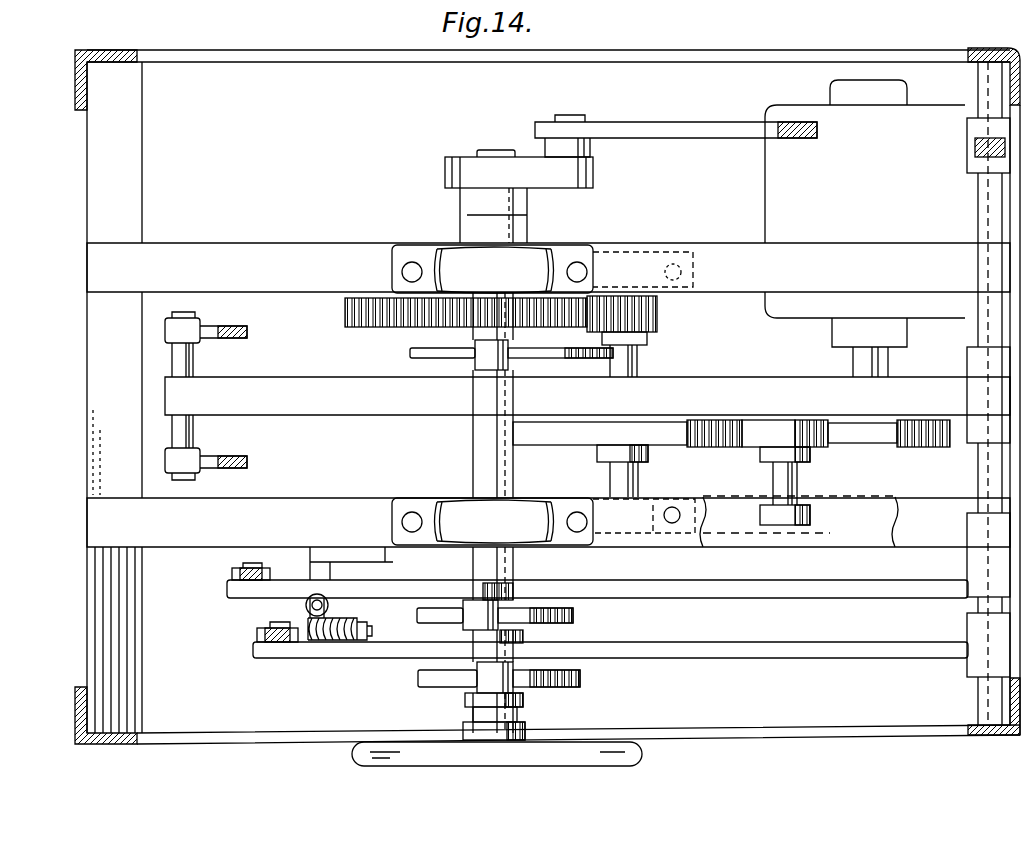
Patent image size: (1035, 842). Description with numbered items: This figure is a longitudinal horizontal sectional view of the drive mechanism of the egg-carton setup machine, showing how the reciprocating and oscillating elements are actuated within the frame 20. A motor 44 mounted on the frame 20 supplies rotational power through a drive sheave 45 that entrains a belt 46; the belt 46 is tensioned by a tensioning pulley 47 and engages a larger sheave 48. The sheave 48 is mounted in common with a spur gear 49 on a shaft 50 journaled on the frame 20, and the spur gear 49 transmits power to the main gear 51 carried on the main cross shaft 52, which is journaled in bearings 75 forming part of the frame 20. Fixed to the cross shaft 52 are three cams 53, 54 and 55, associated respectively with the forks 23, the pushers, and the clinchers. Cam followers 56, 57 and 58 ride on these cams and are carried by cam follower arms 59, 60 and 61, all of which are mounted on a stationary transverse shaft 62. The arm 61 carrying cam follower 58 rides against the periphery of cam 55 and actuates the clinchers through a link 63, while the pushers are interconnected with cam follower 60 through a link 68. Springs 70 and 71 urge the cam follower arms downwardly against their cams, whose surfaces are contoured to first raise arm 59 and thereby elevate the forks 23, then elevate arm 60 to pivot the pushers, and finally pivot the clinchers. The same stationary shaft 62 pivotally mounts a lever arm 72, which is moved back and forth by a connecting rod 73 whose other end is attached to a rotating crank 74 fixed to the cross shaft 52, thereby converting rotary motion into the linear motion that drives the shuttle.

The frame 20 is at (81, 252).
The forks 23 is at (232, 456).
The motor 44 is at (890, 216).
The drive sheave 45 is at (931, 443).
The belt 46 is at (875, 437).
The tensioning pulley 47 is at (803, 430).
The sheave 48 is at (720, 440).
The spur gear 49 is at (658, 323).
The shaft 50 is at (641, 348).
The main gear 51 is at (374, 298).
The main cross shaft 52 is at (478, 450).
The cam 53 is at (410, 352).
The cam 54 is at (575, 613).
The cam 55 is at (580, 678).
The cam follower 56 is at (480, 350).
The cam follower 57 is at (470, 608).
The cam follower 58 is at (418, 678).
The cam follower arm 59 is at (770, 414).
The cam follower arm 60 is at (868, 590).
The cam follower arm 61 is at (866, 650).
The transverse shaft 62 is at (993, 323).
The link 63 is at (242, 634).
The link 68 is at (232, 574).
The spring 70 is at (336, 642).
The spring 71 is at (330, 607).
The lever arm 72 is at (975, 150).
The connecting rod 73 is at (708, 126).
The crank 74 is at (488, 168).
The bearings 75 is at (520, 287).